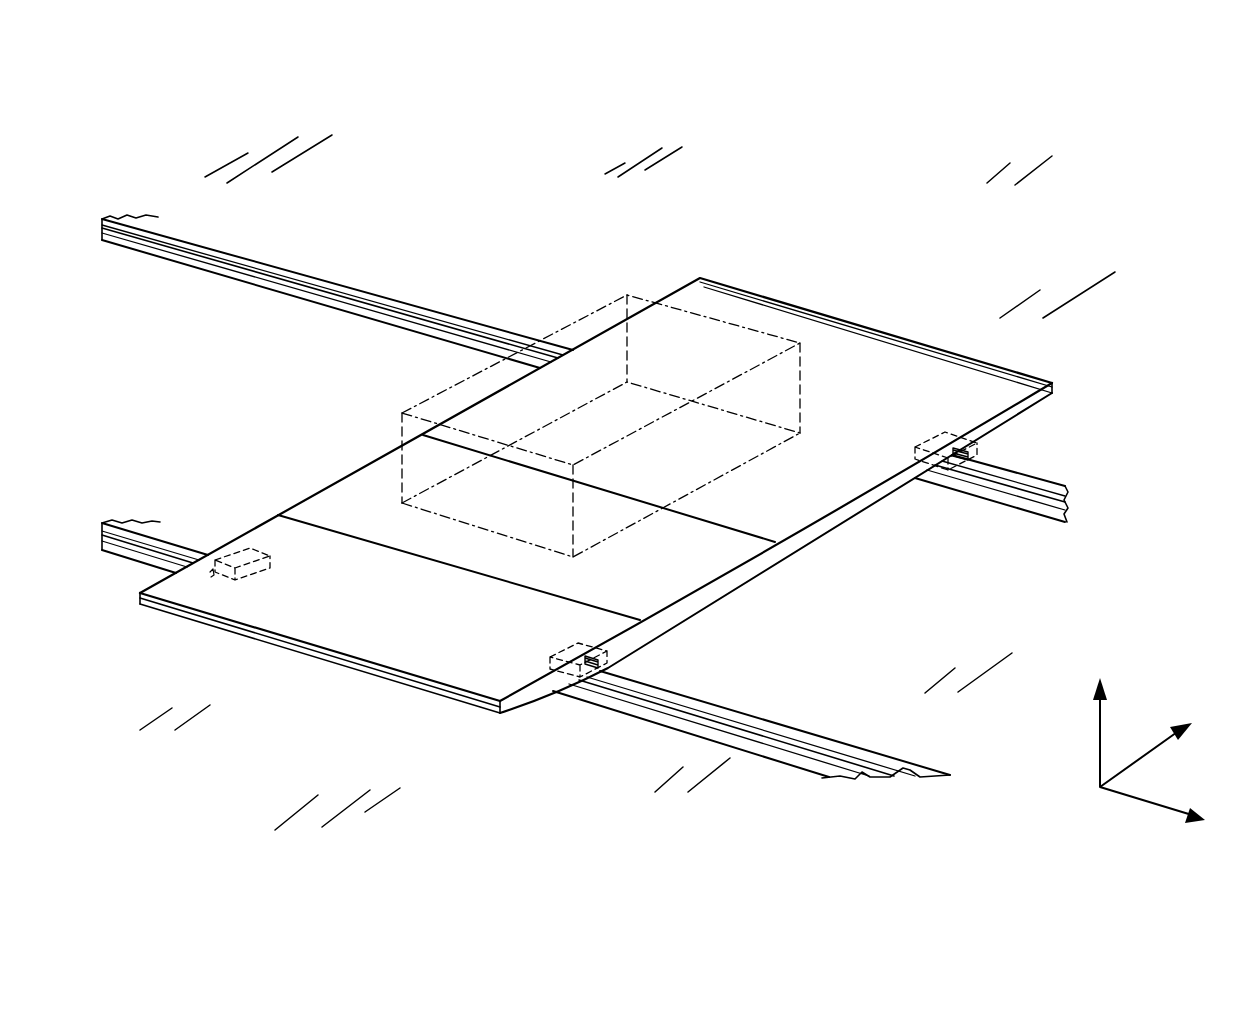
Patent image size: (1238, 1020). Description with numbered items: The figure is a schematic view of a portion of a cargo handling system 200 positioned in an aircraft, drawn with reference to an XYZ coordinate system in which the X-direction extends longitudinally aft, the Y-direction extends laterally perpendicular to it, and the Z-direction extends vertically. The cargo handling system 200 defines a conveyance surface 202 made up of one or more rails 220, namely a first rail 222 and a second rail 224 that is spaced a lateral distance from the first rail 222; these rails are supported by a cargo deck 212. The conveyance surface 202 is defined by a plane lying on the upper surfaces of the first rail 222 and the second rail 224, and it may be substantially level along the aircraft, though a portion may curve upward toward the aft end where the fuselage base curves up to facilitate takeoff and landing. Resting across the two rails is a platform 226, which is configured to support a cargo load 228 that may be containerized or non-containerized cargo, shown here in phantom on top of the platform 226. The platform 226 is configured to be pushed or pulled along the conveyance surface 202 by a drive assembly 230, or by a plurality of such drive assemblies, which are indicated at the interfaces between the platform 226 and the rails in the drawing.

The cargo handling system 200 is at (427, 137).
The conveyance surface 202 is at (1080, 461).
The cargo deck 212 is at (164, 804).
The rails 220 is at (364, 377).
The first rail 222 is at (133, 573).
The second rail 224 is at (410, 289).
The platform 226 is at (888, 342).
The cargo load 228 is at (633, 300).
The drive assembly 230 is at (958, 434).